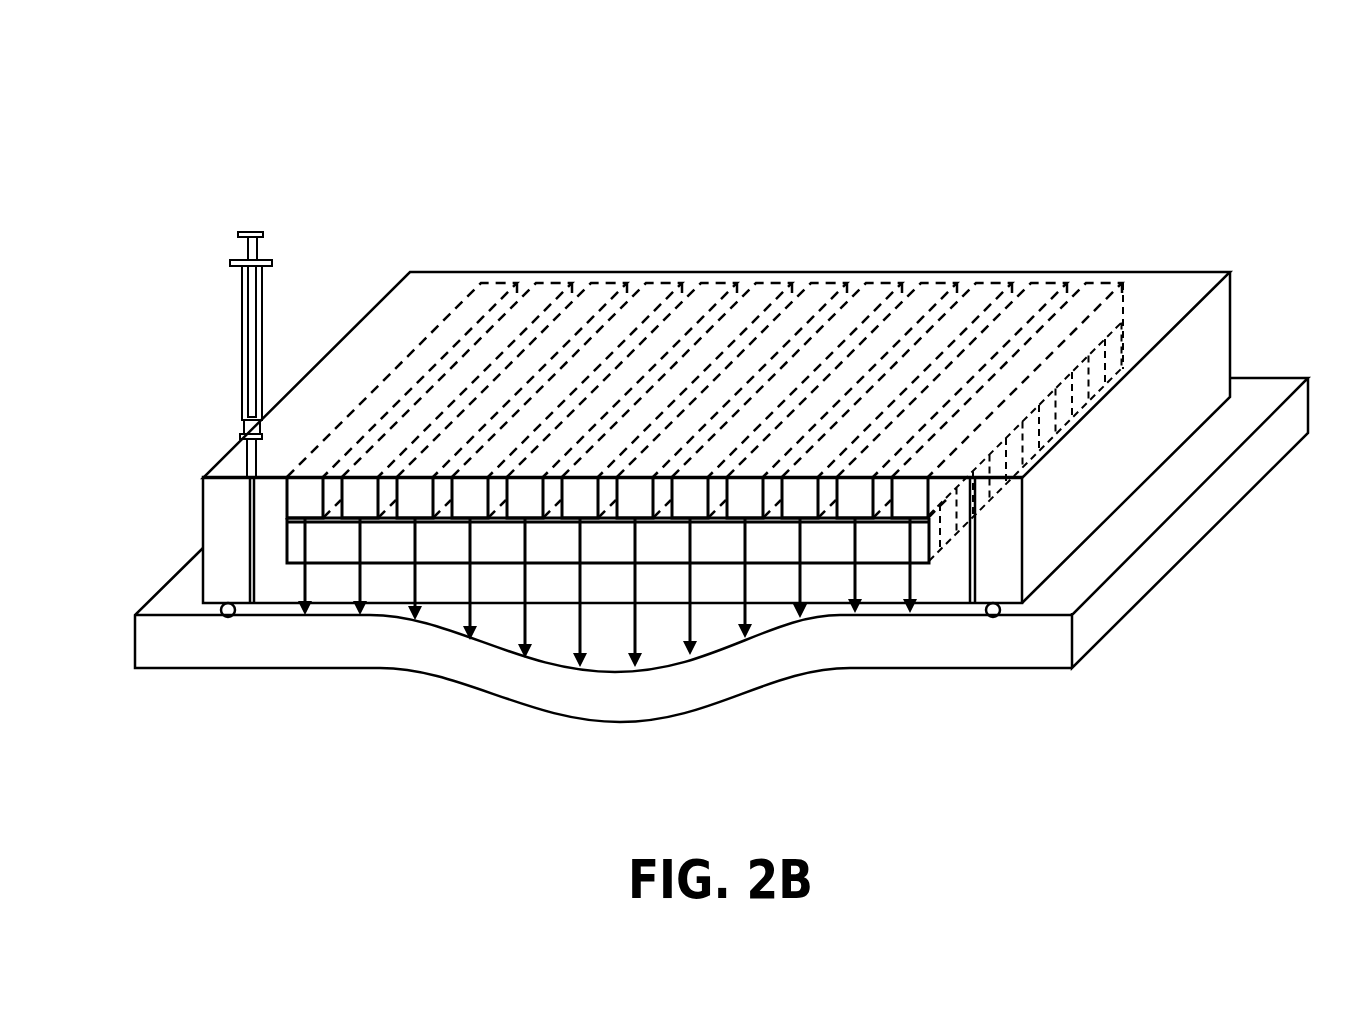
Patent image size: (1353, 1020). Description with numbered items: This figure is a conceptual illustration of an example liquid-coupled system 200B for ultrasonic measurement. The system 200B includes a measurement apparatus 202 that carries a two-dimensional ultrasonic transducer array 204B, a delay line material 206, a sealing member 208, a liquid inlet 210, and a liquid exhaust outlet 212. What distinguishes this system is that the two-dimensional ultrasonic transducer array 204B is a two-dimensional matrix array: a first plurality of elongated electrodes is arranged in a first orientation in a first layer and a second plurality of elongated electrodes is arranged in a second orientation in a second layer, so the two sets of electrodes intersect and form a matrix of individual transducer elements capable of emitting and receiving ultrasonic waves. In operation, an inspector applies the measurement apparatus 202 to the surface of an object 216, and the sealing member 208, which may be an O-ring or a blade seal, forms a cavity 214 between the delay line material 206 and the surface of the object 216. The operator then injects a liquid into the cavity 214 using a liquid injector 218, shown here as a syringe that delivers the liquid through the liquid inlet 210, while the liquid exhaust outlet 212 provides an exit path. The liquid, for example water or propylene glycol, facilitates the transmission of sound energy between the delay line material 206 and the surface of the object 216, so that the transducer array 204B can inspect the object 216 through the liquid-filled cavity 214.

The liquid-coupled system 200B is at (146, 114).
The measurement apparatus 202 is at (182, 424).
The two-dimensional ultrasonic transducer array 204B is at (932, 283).
The delay line material 206 is at (1002, 575).
The sealing member 208 is at (220, 610).
The liquid inlet 210 is at (248, 528).
The liquid exhaust outlet 212 is at (975, 533).
The cavity 214 is at (667, 638).
The object 216 is at (1090, 647).
The liquid injector 218 is at (260, 303).